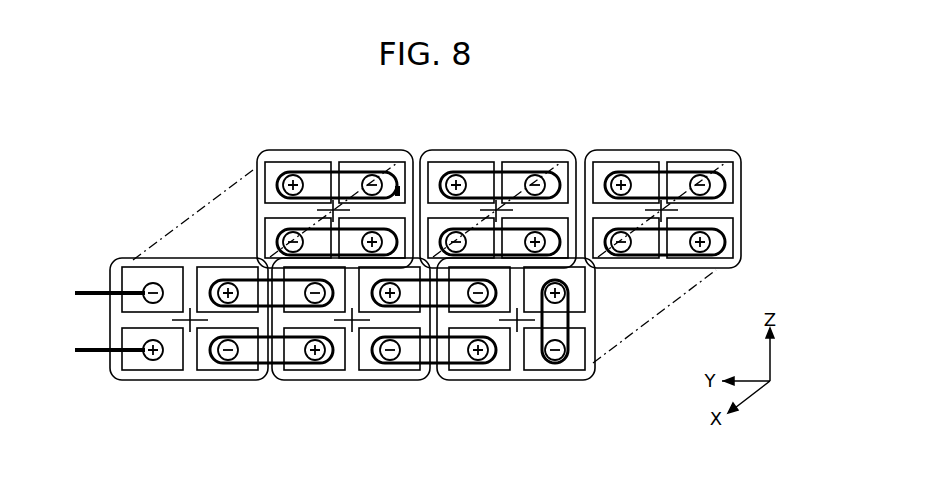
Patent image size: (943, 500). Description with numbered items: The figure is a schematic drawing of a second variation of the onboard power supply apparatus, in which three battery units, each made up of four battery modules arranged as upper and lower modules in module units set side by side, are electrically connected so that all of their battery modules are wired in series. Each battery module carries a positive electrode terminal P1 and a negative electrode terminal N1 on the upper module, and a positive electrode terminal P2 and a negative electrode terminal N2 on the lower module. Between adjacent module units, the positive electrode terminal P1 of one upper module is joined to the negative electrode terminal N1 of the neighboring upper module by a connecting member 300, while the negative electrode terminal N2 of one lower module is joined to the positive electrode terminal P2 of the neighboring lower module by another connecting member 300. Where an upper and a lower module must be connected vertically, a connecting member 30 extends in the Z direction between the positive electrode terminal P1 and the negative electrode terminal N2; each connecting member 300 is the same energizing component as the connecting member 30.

The connecting member 30 is at (596, 322).
The connecting member 300 is at (333, 172).
The positive electrode terminal P1 is at (284, 182).
The negative electrode terminal N1 is at (375, 174).
The positive electrode terminal P2 is at (380, 232).
The negative electrode terminal N2 is at (284, 237).